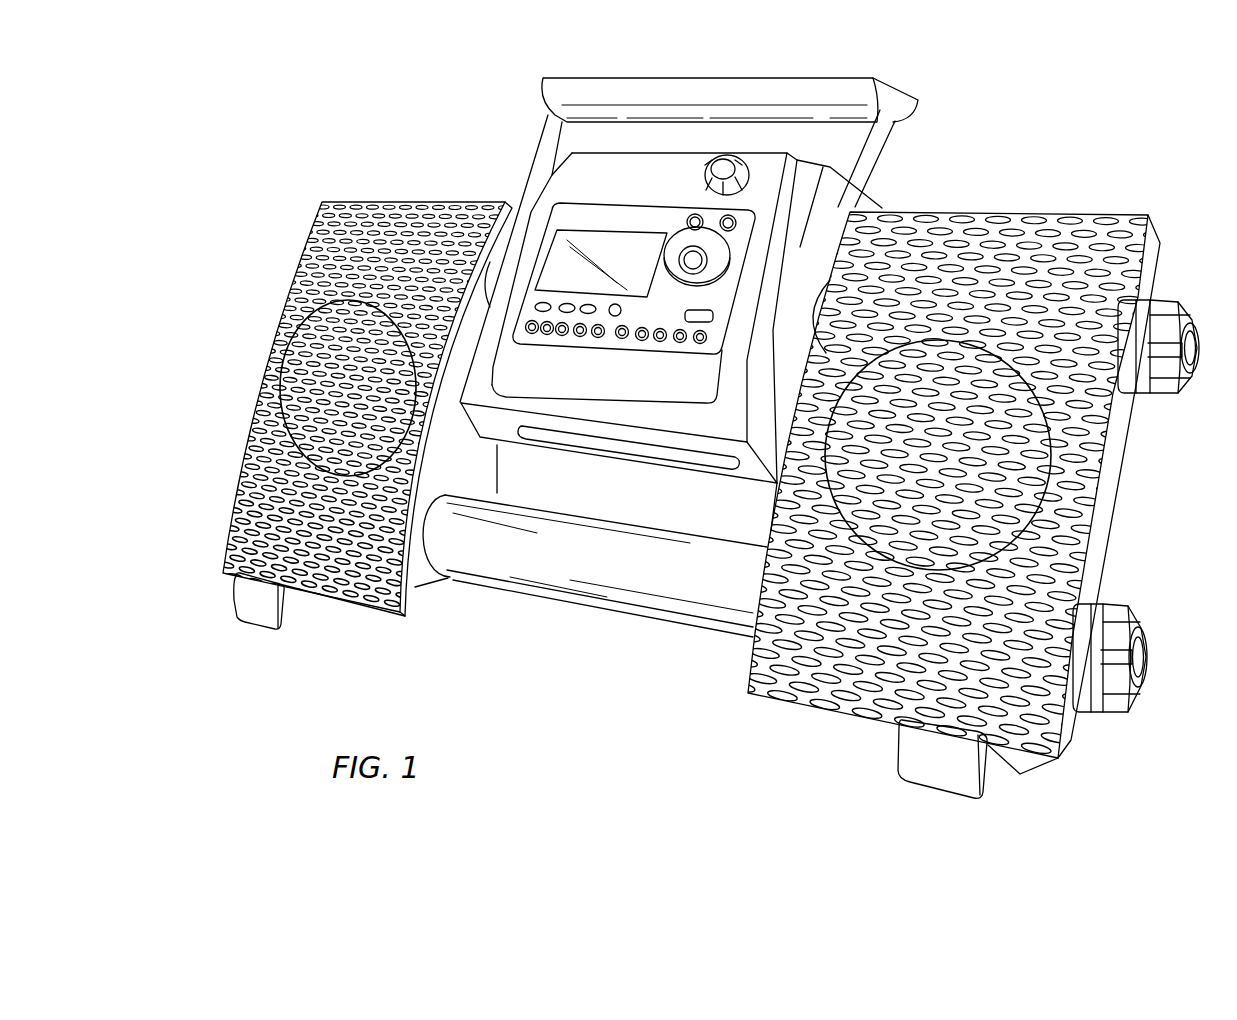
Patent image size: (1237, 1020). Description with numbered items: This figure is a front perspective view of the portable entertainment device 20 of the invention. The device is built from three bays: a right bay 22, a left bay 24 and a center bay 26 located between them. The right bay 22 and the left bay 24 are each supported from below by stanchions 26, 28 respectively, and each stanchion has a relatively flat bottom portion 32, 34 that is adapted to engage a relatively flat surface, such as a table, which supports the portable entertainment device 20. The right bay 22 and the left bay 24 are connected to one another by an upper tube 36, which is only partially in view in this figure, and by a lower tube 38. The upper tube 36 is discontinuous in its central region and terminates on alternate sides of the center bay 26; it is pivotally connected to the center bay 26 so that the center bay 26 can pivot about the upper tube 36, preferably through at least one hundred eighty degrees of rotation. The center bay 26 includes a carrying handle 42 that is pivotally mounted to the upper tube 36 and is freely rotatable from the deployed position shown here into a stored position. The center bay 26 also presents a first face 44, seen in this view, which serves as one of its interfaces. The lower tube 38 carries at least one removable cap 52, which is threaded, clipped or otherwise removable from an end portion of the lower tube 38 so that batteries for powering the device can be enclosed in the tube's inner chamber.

The portable entertainment device 20 is at (282, 177).
The right bay 22 is at (1140, 212).
The left bay 24 is at (228, 500).
The center bay 26 is at (835, 172).
The stanchion 28 is at (258, 628).
The flat bottom portion 32 is at (1023, 777).
The flat bottom portion 34 is at (315, 615).
The upper tube 36 is at (812, 307).
The lower tube 38 is at (555, 557).
The carrying handle 42 is at (753, 77).
The first face 44 is at (593, 181).
The removable cap 52 is at (1128, 641).